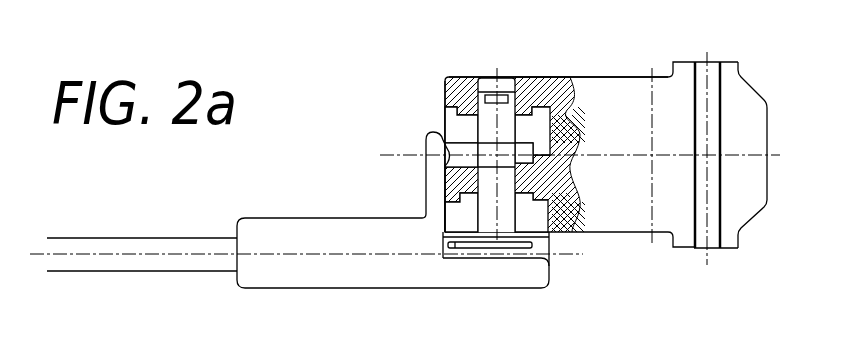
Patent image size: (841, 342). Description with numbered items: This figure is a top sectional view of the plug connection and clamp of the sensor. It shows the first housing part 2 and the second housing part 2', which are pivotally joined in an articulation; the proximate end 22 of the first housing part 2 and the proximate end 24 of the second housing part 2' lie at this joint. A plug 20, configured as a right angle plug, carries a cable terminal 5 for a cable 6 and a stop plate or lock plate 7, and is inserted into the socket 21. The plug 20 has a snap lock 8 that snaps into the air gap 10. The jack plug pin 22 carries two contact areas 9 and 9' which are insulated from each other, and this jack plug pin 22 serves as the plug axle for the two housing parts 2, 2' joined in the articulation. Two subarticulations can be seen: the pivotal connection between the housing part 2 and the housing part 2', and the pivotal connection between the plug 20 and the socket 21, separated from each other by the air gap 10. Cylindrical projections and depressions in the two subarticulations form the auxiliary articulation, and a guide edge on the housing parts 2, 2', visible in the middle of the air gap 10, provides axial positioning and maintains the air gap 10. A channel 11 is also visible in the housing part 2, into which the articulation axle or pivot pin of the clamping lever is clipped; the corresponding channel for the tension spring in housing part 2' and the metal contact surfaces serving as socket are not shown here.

The first housing part 2 is at (516, 133).
The second housing part 2' is at (514, 191).
The cable terminal 5 is at (293, 233).
The cable 6 is at (195, 245).
The stop plate or lock plate 7 is at (483, 247).
The snap lock 8 is at (435, 172).
The first contact area 9 is at (518, 125).
The second contact area 9' is at (570, 242).
The air gap 10 is at (467, 148).
The channel 11 is at (710, 108).
The plug 20 is at (433, 288).
The socket 21 is at (593, 77).
The jack plug pin 22 is at (443, 85).
The proximate end of second housing part 24 is at (443, 187).